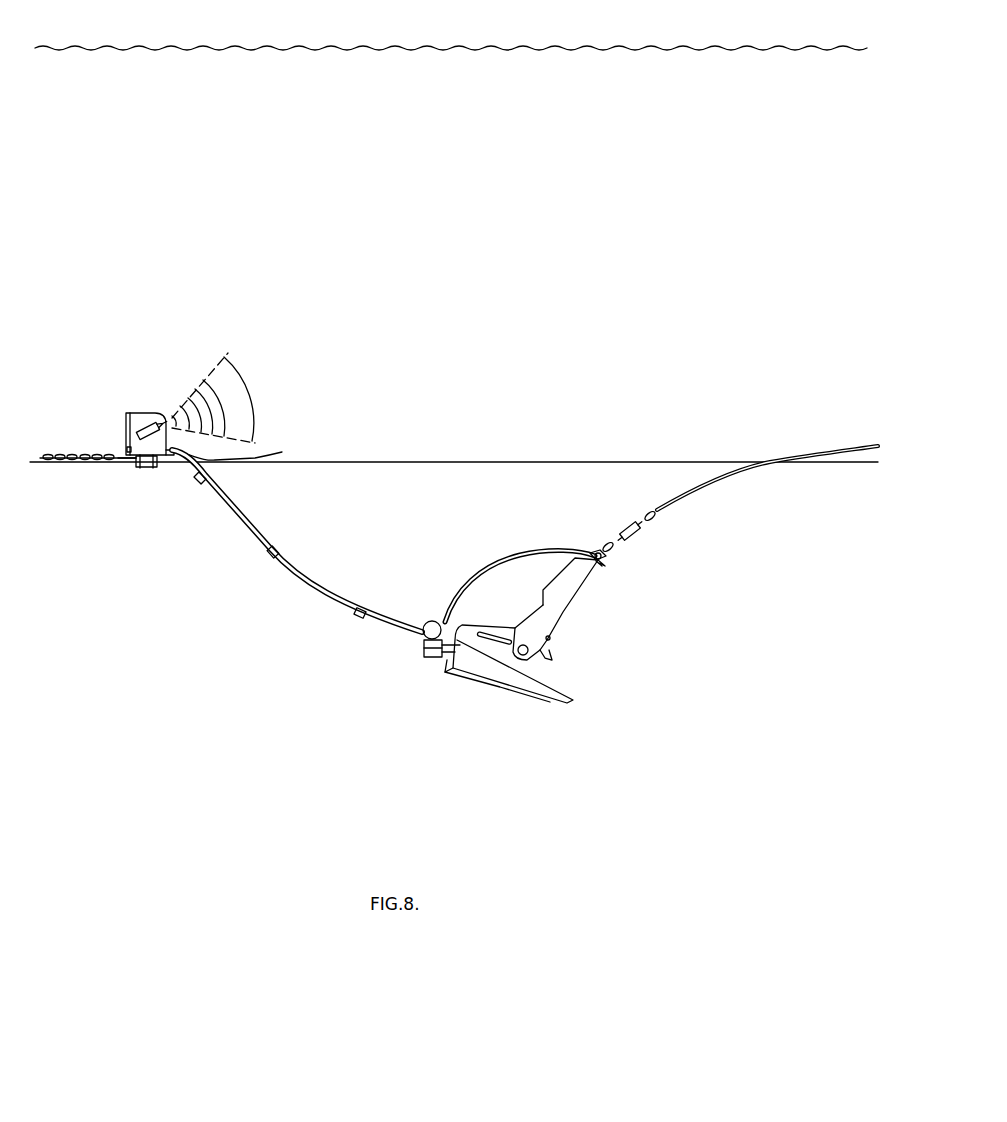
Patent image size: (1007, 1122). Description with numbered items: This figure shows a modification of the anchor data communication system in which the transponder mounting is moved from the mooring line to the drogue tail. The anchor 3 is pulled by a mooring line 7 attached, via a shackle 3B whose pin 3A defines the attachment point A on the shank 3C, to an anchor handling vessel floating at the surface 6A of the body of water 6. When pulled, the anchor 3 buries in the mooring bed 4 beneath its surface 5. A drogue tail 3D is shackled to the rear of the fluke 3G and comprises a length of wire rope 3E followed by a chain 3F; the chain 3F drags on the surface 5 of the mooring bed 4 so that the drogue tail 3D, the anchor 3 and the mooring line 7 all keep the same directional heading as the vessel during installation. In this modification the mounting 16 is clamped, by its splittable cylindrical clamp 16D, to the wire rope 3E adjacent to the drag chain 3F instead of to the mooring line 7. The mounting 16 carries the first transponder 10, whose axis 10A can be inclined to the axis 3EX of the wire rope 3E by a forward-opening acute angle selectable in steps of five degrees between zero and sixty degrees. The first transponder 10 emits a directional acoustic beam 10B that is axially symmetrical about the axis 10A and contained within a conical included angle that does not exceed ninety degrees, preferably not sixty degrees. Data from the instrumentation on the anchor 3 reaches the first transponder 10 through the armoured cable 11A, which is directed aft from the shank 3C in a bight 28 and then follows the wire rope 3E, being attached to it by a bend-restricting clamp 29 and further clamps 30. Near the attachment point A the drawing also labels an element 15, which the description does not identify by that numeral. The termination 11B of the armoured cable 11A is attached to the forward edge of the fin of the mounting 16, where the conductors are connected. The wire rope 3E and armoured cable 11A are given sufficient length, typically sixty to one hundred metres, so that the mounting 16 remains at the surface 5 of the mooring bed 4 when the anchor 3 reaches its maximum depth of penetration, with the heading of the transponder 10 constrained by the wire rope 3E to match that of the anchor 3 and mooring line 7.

The surface of body of water 6A is at (452, 48).
The body of water 6 is at (478, 295).
The mooring bed 4 is at (412, 583).
The surface of mooring bed 5 is at (578, 462).
The mounting 16 is at (170, 383).
The first transponder 10 is at (163, 422).
The axis of first transponder 10A is at (207, 407).
The directional acoustic beam 10B is at (178, 414).
The splittable cylindrical clamp 16D is at (146, 468).
The chain 3F is at (73, 452).
The axis of wire rope 3EX is at (130, 462).
The termination of armoured cable 11B is at (246, 452).
The drogue tail 3D is at (381, 593).
The armoured cable 11A is at (250, 515).
The wire rope 3E is at (238, 529).
The clamps 30 is at (200, 481).
The bend-restricting clamp 29 is at (430, 660).
The bight 28 is at (505, 560).
The anchor 3 is at (534, 662).
The shank 3C is at (565, 607).
The fluke 3G is at (522, 690).
The attachment point A is at (597, 544).
The pin 15 is at (601, 566).
The pin 3A is at (604, 560).
The shackle 3B is at (606, 556).
The mooring line 7 is at (700, 483).